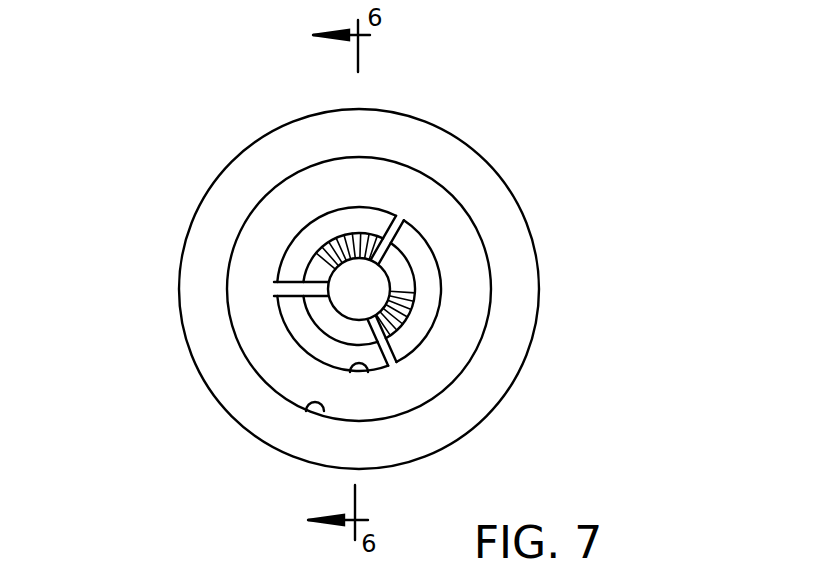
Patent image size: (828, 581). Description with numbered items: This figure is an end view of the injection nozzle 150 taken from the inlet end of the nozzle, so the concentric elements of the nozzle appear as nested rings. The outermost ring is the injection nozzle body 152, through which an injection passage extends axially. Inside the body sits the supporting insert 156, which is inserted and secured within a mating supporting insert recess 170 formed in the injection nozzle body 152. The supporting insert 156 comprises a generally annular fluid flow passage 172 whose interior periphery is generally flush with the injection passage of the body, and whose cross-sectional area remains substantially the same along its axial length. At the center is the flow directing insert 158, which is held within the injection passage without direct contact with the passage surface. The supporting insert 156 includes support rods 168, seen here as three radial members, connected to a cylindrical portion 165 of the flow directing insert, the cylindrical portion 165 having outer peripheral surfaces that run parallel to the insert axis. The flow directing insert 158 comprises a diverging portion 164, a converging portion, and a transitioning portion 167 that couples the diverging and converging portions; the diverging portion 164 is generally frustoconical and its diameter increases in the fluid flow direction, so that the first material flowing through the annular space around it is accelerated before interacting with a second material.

The injection nozzle 150 is at (271, 93).
The injection nozzle body 152 is at (327, 135).
The supporting insert 156 is at (452, 222).
The flow directing insert 158 is at (334, 330).
The diverging portion 164 is at (392, 315).
The cylindrical portion 165 is at (348, 278).
The transitioning portion 167 is at (393, 279).
The support rods 168 is at (389, 226).
The supporting insert recess 170 is at (322, 408).
The fluid flow passage 172 is at (366, 372).